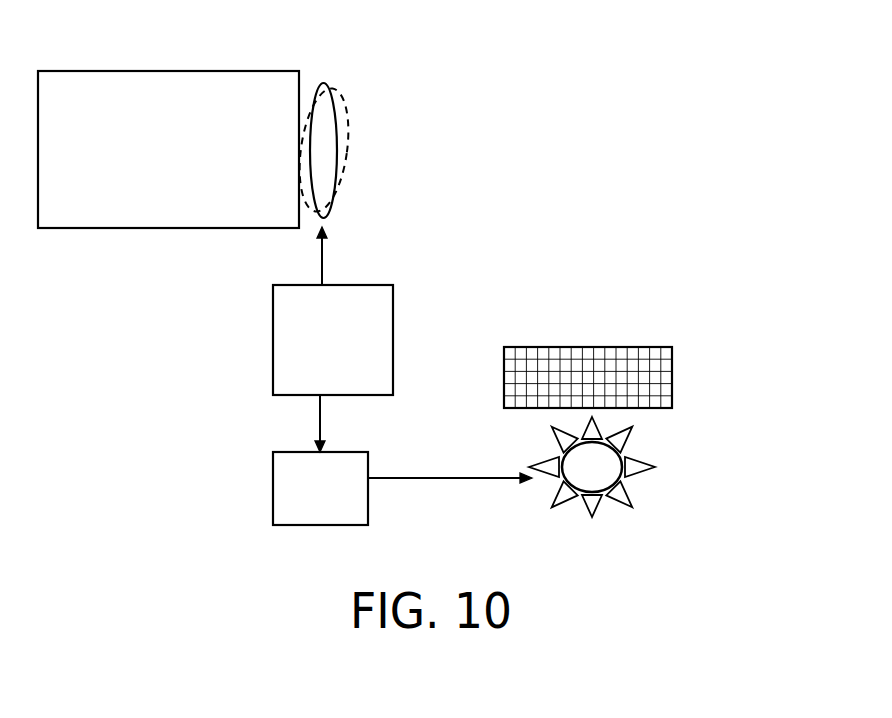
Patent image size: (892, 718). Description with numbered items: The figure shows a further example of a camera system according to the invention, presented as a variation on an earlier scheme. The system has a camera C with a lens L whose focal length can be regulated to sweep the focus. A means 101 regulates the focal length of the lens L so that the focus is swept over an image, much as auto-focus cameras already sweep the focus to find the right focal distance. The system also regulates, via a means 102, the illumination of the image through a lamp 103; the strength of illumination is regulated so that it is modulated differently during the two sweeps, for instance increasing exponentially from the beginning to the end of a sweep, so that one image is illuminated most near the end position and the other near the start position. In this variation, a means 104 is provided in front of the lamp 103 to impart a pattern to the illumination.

The camera C is at (168, 149).
The lens L is at (324, 121).
The means to regulate the focal length of the lens 101 is at (333, 311).
The means to regulate the illumination 102 is at (402, 460).
The lamp 103 is at (670, 467).
The means to impart a pattern to the illumination 104 is at (634, 366).